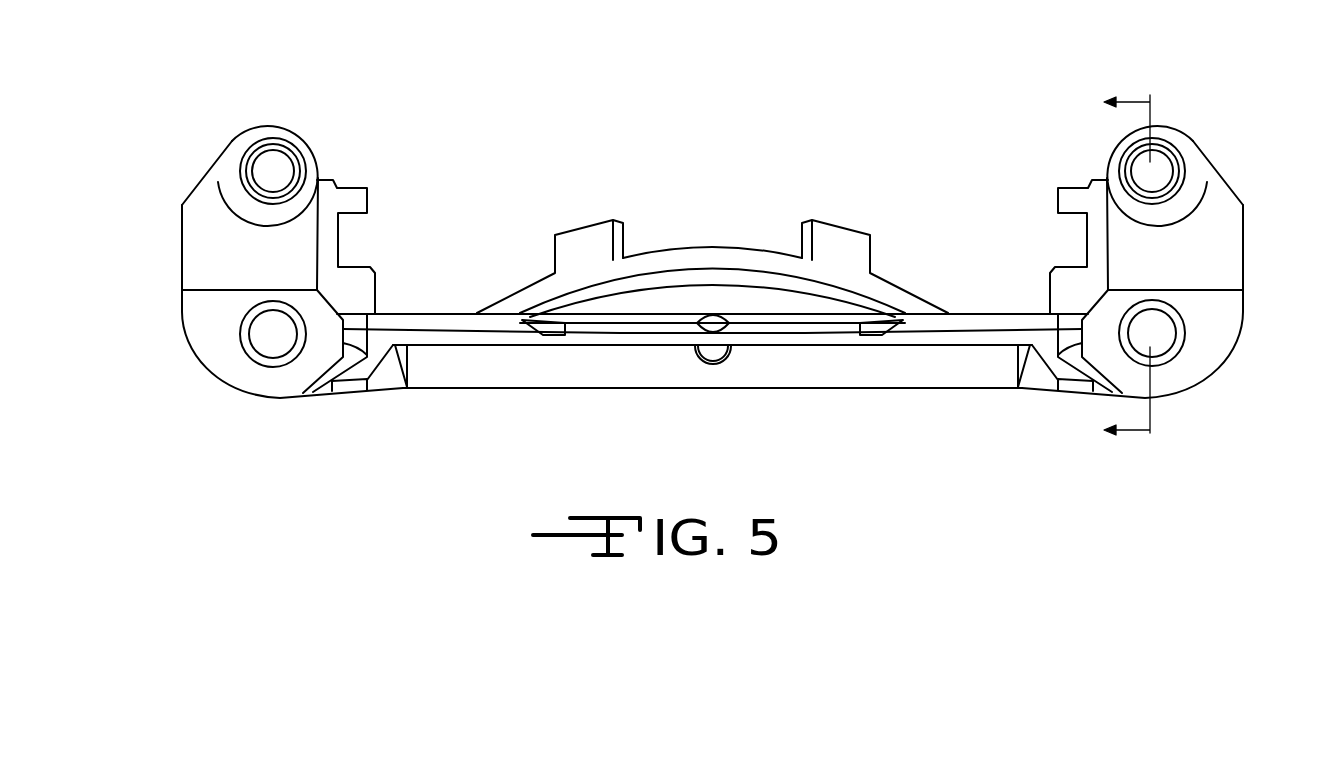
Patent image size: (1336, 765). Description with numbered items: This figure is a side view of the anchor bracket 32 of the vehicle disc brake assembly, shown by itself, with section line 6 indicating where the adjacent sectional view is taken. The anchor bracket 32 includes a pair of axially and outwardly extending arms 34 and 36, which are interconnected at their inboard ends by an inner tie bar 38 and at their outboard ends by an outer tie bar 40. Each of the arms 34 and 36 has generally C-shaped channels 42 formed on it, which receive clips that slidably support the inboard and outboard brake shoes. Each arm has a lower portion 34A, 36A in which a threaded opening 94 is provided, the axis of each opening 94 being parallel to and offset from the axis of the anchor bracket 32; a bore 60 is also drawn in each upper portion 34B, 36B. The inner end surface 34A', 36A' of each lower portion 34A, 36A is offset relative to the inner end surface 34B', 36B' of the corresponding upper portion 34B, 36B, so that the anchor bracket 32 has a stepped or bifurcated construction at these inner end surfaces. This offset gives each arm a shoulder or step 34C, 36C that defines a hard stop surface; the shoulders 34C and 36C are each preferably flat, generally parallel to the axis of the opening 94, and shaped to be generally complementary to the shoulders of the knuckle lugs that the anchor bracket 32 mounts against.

The anchor bracket 32 is at (913, 223).
The arm 34 is at (1244, 281).
The lower portion 34A is at (1140, 367).
The inner end surface 34A' is at (1163, 343).
The upper portion 34B is at (1216, 161).
The inner end surface 34B' is at (1259, 177).
The shoulder 34C is at (1200, 289).
The arm 36 is at (181, 280).
The lower portion 36A is at (266, 356).
The inner end surface 36A' is at (245, 341).
The upper portion 36B is at (219, 149).
The inner end surface 36B' is at (169, 180).
The shoulder 36C is at (227, 288).
The inner tie bar 38 is at (802, 372).
The outer tie bar 40 is at (675, 258).
The C-shaped channel 42 is at (343, 243).
The mounting bore 60 is at (291, 173).
The threaded opening 94 is at (252, 334).
The section line 6- 6 is at (1127, 267).